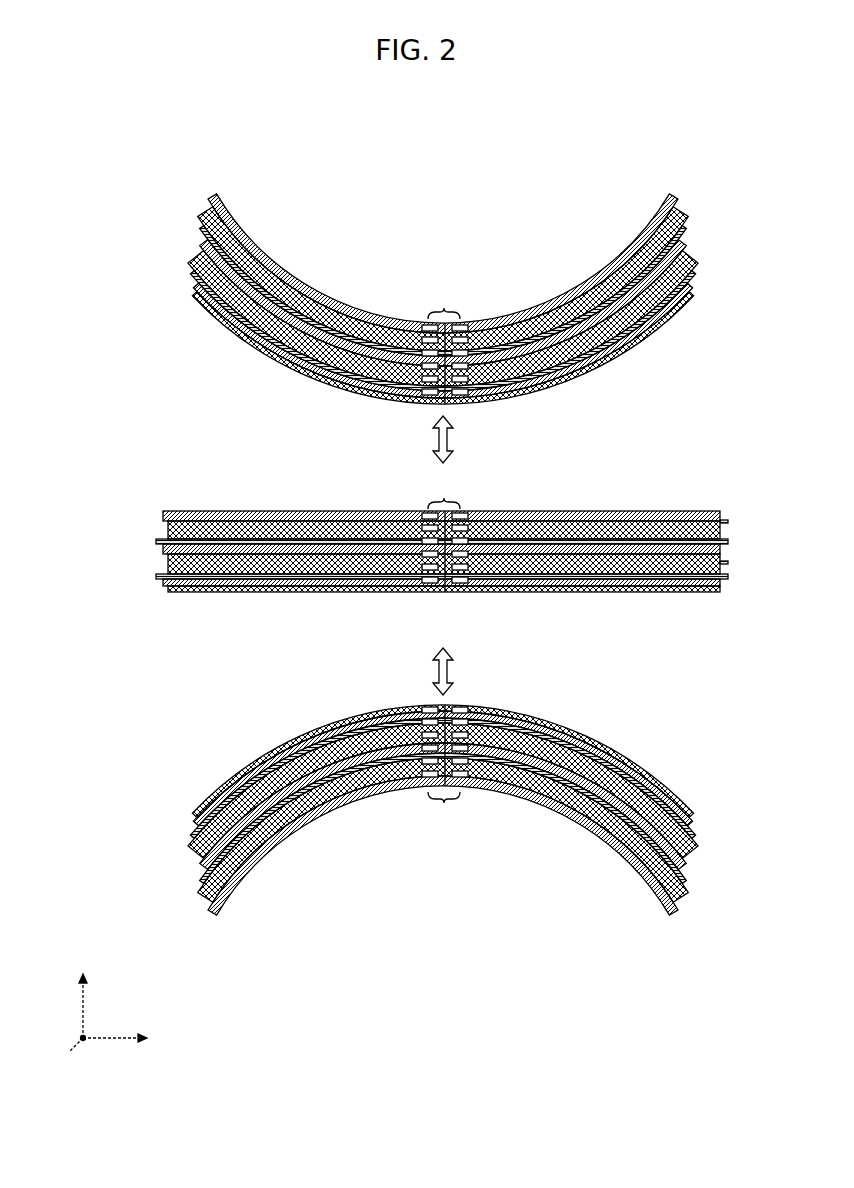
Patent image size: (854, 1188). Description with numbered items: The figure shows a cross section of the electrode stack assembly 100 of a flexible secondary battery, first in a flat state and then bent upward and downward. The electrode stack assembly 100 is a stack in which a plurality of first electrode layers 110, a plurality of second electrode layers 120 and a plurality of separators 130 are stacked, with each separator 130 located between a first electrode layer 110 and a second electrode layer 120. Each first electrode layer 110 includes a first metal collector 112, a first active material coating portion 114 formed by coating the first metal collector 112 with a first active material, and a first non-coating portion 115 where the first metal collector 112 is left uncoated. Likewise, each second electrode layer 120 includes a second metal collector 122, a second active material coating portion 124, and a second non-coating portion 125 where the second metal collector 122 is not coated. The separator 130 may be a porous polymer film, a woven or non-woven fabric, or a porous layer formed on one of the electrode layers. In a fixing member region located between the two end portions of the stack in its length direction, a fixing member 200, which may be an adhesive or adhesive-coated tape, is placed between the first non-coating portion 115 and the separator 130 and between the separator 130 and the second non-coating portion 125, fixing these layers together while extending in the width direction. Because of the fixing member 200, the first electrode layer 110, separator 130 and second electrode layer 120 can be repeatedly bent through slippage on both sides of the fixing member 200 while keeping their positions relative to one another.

The electrode stack assembly 100 is at (168, 463).
The first electrode layer 110 is at (83, 546).
The first metal collector 112 is at (156, 548).
The first active material coating portion 114 is at (157, 566).
The first non-coating portion 115 is at (437, 586).
The second electrode layer 120 is at (83, 498).
The second metal collector 122 is at (155, 508).
The second active material coating portion 124 is at (158, 521).
The second non-coating portion 125 is at (450, 586).
The separator 130 is at (150, 534).
The fixing member 200 is at (425, 586).